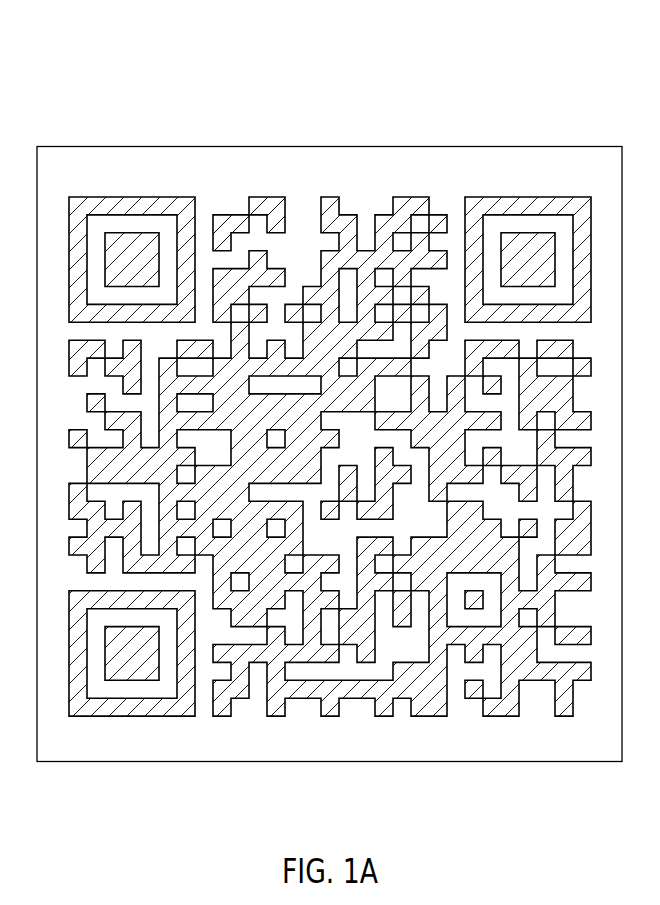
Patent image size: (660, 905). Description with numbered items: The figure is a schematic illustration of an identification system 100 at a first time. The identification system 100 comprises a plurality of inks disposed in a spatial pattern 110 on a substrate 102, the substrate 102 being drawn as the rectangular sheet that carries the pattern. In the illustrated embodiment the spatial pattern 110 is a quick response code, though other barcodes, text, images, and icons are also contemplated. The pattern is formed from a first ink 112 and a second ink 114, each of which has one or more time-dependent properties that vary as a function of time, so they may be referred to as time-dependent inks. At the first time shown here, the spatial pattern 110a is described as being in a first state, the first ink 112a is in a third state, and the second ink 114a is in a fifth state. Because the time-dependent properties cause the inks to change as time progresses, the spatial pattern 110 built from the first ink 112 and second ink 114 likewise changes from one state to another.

The identification system 100 is at (257, 110).
The substrate 102 is at (133, 730).
The spatial pattern 110 is at (413, 727).
The spatial pattern in a first state 110a is at (247, 727).
The first ink 112 is at (232, 210).
The first ink in a third state 112a is at (267, 212).
The second ink 114 is at (438, 215).
The second ink in a fifth state 114a is at (408, 198).